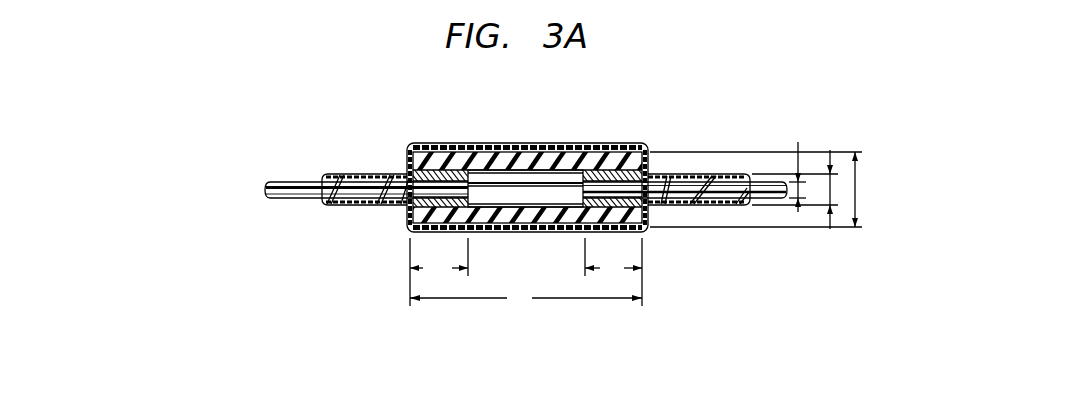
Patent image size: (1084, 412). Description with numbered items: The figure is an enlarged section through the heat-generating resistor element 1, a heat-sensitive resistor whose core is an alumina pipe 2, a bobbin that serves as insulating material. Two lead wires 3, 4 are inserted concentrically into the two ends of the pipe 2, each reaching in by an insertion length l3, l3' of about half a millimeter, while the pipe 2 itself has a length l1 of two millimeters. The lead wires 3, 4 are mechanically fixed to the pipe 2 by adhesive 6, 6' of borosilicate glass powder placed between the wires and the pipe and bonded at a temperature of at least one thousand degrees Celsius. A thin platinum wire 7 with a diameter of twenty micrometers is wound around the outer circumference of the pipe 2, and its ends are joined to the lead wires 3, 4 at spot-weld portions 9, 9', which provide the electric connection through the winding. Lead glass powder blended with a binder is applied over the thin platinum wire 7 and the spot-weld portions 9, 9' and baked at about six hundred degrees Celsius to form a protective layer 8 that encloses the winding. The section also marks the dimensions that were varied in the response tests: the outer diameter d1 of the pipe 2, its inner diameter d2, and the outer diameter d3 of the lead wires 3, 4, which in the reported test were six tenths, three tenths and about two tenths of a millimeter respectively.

The heat-generating resistor element 1 is at (567, 128).
The alumina pipe 2 is at (652, 147).
The lead wire 3 is at (303, 184).
The lead wire 4 is at (765, 186).
The adhesive 6 is at (699, 159).
The adhesive 6' is at (364, 207).
The thin platinum wire 7 is at (510, 150).
The protective layer 8 is at (482, 150).
The spot-weld portion 9 is at (705, 159).
The spot-weld portion 9' is at (368, 169).
The outer diameter of the pipe d1 is at (756, 189).
The inner diameter of the pipe d2 is at (796, 170).
The outer diameter of the lead wires d3 is at (795, 162).
The length of the pipe l1 is at (526, 275).
The insertion length of lead wire l3 is at (613, 260).
The insertion length of lead wire l3' is at (439, 260).